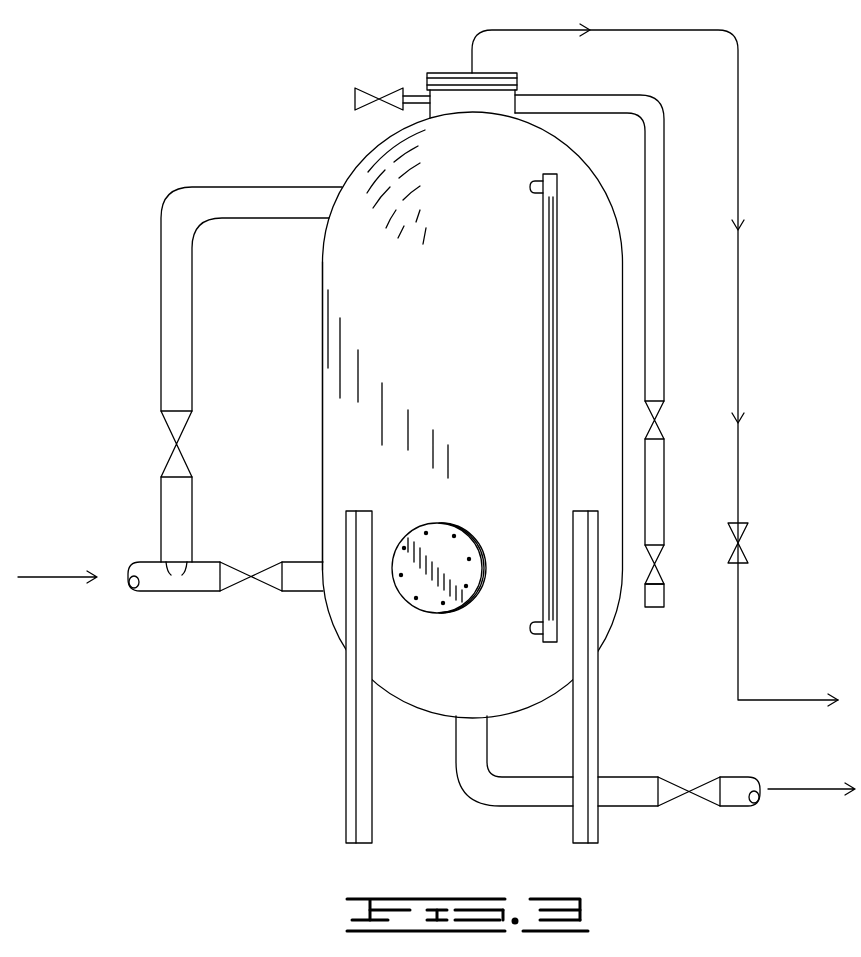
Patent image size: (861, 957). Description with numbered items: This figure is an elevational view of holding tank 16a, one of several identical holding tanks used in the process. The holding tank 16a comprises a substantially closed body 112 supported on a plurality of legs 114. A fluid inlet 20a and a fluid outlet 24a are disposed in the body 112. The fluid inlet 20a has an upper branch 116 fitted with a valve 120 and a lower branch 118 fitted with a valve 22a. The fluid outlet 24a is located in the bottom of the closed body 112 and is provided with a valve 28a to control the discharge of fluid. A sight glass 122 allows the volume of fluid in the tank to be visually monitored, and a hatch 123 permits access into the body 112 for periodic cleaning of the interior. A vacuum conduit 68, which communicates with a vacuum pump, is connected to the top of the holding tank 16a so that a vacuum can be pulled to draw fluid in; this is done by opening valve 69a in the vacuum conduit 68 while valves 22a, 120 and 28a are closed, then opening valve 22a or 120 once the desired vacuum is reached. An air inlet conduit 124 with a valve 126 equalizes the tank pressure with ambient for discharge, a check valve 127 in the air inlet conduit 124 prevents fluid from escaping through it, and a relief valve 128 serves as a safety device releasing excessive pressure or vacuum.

The holding tank 16a is at (433, 415).
The closed body 112 is at (322, 283).
The legs 114 is at (347, 757).
The upper branch 116 is at (161, 333).
The lower branch 118 is at (305, 592).
The valve 120 is at (186, 453).
The sight glass 122 is at (543, 322).
The hatch 123 is at (446, 527).
The air inlet conduit 124 is at (664, 323).
The valve 126 is at (662, 575).
The check valve 127 is at (655, 421).
The relief valve 128 is at (393, 87).
The vacuum conduit 68 is at (738, 380).
The valve 69a is at (738, 545).
The fluid inlet 20a is at (170, 592).
The valve 22a is at (237, 562).
The fluid outlet 24a is at (737, 777).
The valve 28a is at (694, 794).